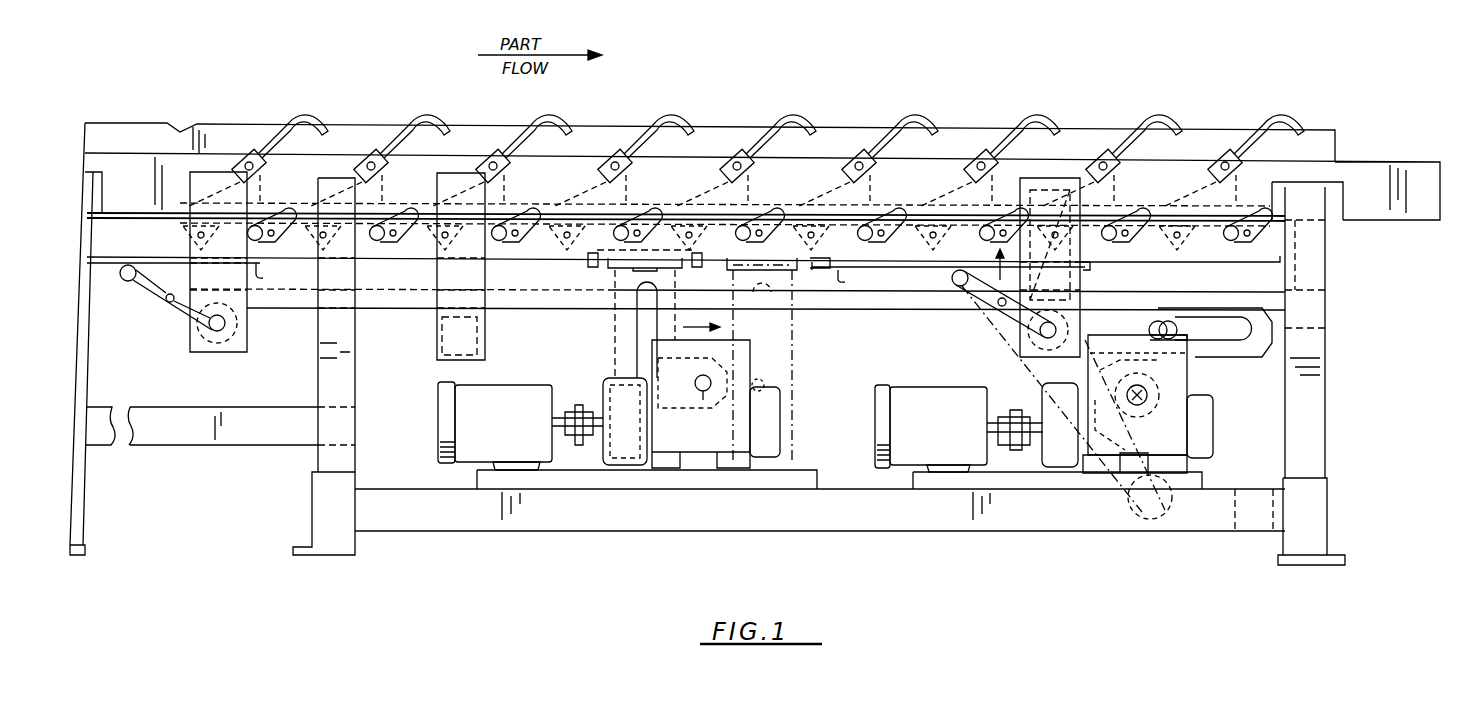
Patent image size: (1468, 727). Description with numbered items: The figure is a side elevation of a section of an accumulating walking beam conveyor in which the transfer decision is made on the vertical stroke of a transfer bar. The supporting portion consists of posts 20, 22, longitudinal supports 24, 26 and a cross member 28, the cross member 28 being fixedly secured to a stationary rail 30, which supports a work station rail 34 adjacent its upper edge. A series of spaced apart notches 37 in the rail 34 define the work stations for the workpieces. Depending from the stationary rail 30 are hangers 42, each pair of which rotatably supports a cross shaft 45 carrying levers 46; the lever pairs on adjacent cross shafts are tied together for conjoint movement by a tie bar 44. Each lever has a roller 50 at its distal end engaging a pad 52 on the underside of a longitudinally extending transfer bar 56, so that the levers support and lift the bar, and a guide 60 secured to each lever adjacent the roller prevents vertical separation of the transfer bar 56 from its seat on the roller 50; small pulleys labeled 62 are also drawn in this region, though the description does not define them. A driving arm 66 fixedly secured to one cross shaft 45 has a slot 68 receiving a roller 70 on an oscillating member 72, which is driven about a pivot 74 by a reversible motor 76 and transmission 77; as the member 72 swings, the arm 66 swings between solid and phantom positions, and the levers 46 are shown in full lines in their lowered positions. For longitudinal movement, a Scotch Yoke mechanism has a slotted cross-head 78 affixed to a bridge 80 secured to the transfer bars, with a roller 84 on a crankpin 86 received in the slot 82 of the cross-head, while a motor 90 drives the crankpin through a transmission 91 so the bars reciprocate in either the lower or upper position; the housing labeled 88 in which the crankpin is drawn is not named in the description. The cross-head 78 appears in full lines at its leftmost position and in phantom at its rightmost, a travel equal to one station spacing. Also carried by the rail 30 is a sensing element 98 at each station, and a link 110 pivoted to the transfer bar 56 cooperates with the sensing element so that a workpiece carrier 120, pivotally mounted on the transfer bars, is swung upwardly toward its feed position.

The post 20 is at (323, 457).
The post 22 is at (1318, 435).
The longitudinal support 24 is at (253, 432).
The longitudinal support 26 is at (573, 517).
The cross member 28 is at (485, 340).
The stationary rail 30 is at (1440, 222).
The work station rail 34 is at (1336, 129).
The notch 37 is at (180, 131).
The hanger 42 is at (235, 348).
The tie bar 44 is at (393, 302).
The cross shaft 45 is at (226, 324).
The lever 46 is at (177, 325).
The roller 50 is at (150, 306).
The pad 52 is at (103, 260).
The transfer bar 56 is at (1270, 258).
The guide 60 is at (800, 270).
The idler pulley 62 is at (164, 322).
The driving arm 66 is at (1258, 347).
The slot 68 is at (1228, 325).
The roller 70 is at (1177, 320).
The oscillating member 72 is at (1187, 372).
The pivot 74 is at (1180, 415).
The reversible motor 76 is at (976, 427).
The transmission 77 is at (1177, 439).
The slotted cross-head 78 is at (668, 278).
The bridge 80 is at (623, 267).
The slot 82 is at (638, 317).
The roller 84 is at (640, 376).
The crankpin 86 is at (716, 364).
The cam housing 88 is at (701, 404).
The motor 90 is at (520, 426).
The transmission 91 is at (742, 370).
The sensing element 98 is at (780, 120).
The link 110 is at (414, 230).
The workpiece carrier 120 is at (185, 243).